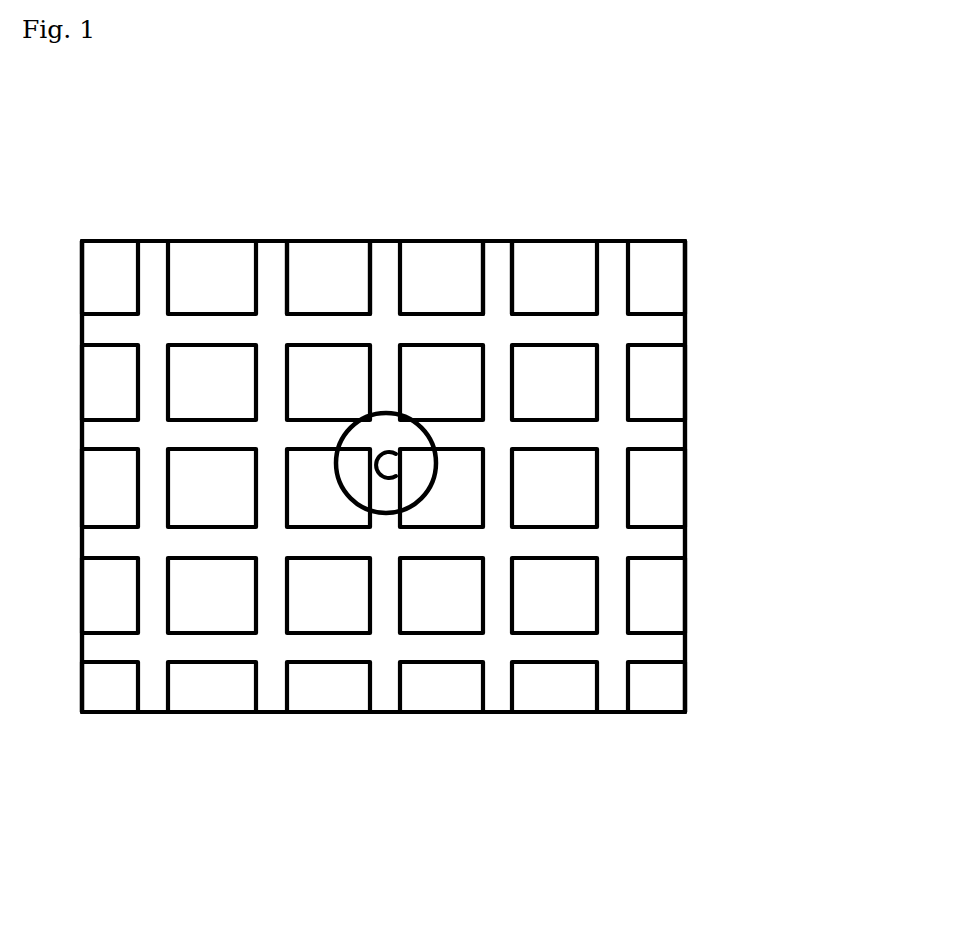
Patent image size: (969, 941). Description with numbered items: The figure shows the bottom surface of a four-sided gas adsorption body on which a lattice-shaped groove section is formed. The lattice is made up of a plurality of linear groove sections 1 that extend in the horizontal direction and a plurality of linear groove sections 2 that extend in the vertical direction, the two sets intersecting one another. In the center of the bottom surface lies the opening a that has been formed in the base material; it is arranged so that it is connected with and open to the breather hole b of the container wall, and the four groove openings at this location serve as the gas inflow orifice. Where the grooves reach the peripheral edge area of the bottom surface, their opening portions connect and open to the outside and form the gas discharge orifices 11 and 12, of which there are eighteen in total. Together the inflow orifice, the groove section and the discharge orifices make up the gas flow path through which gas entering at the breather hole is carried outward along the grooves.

The linear groove sections 1 is at (647, 328).
The linear groove sections 2 is at (383, 270).
The gas discharge orifice 11 is at (670, 432).
The gas discharge orifice 12 is at (495, 250).
The opening a is at (420, 494).
The breather hole b is at (384, 480).